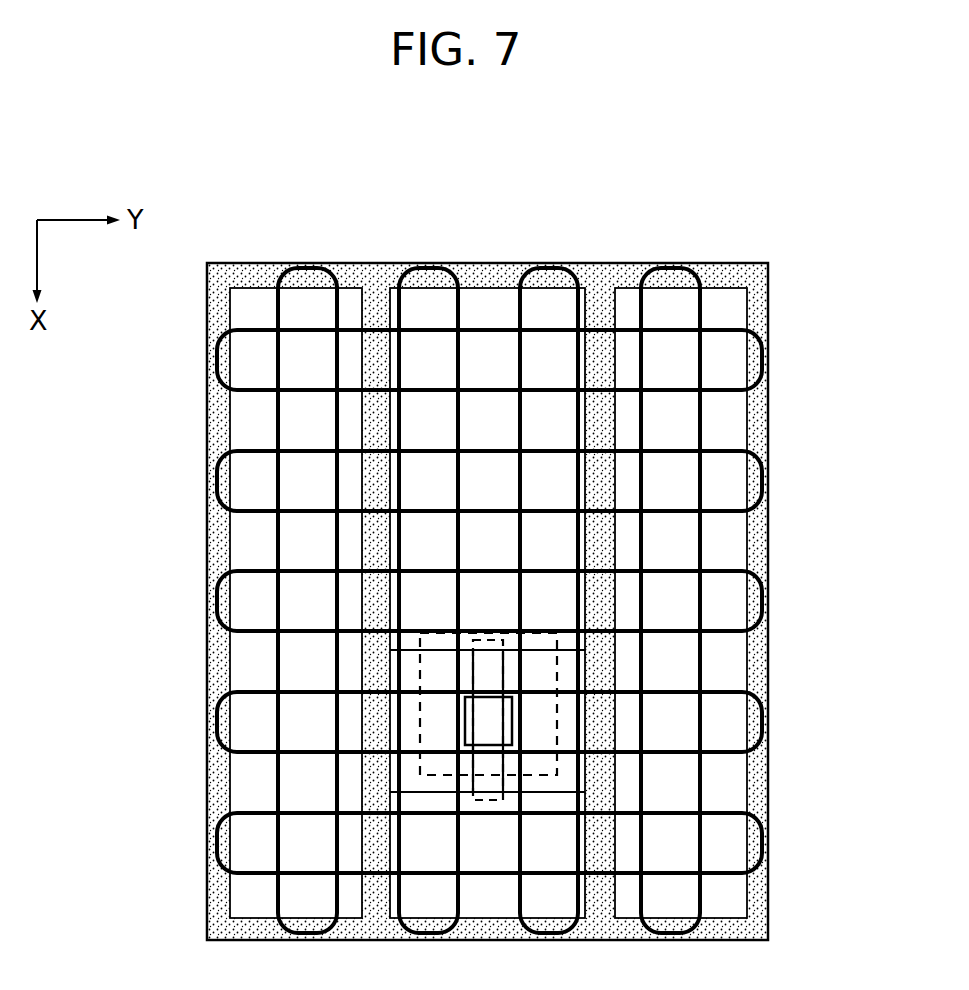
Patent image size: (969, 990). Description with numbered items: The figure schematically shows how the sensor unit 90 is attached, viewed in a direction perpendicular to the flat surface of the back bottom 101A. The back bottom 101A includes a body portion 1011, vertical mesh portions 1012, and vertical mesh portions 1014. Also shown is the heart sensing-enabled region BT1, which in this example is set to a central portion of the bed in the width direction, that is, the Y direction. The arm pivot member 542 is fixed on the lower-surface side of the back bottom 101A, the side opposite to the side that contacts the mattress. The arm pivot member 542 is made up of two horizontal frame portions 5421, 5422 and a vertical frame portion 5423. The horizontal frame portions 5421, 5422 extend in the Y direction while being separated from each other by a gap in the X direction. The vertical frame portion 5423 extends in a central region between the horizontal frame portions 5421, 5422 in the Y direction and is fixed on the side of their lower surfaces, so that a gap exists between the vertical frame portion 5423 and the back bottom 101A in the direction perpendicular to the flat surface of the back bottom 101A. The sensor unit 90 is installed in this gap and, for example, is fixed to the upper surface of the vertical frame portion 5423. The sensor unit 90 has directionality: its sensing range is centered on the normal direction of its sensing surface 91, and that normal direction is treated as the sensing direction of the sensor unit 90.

The back bottom 101A is at (611, 261).
The body portion 1011 is at (753, 774).
The vertical mesh portions 1012 is at (702, 713).
The vertical mesh portions 1014 is at (673, 873).
The heart sensing-enabled region BT1 is at (557, 643).
The arm pivot member 542 is at (490, 616).
The horizontal frame portion 5421 is at (405, 622).
The horizontal frame portion 5422 is at (407, 800).
The vertical frame portion 5423 is at (487, 668).
The sensing surface 91 is at (487, 712).
The sensor unit 90 is at (476, 735).